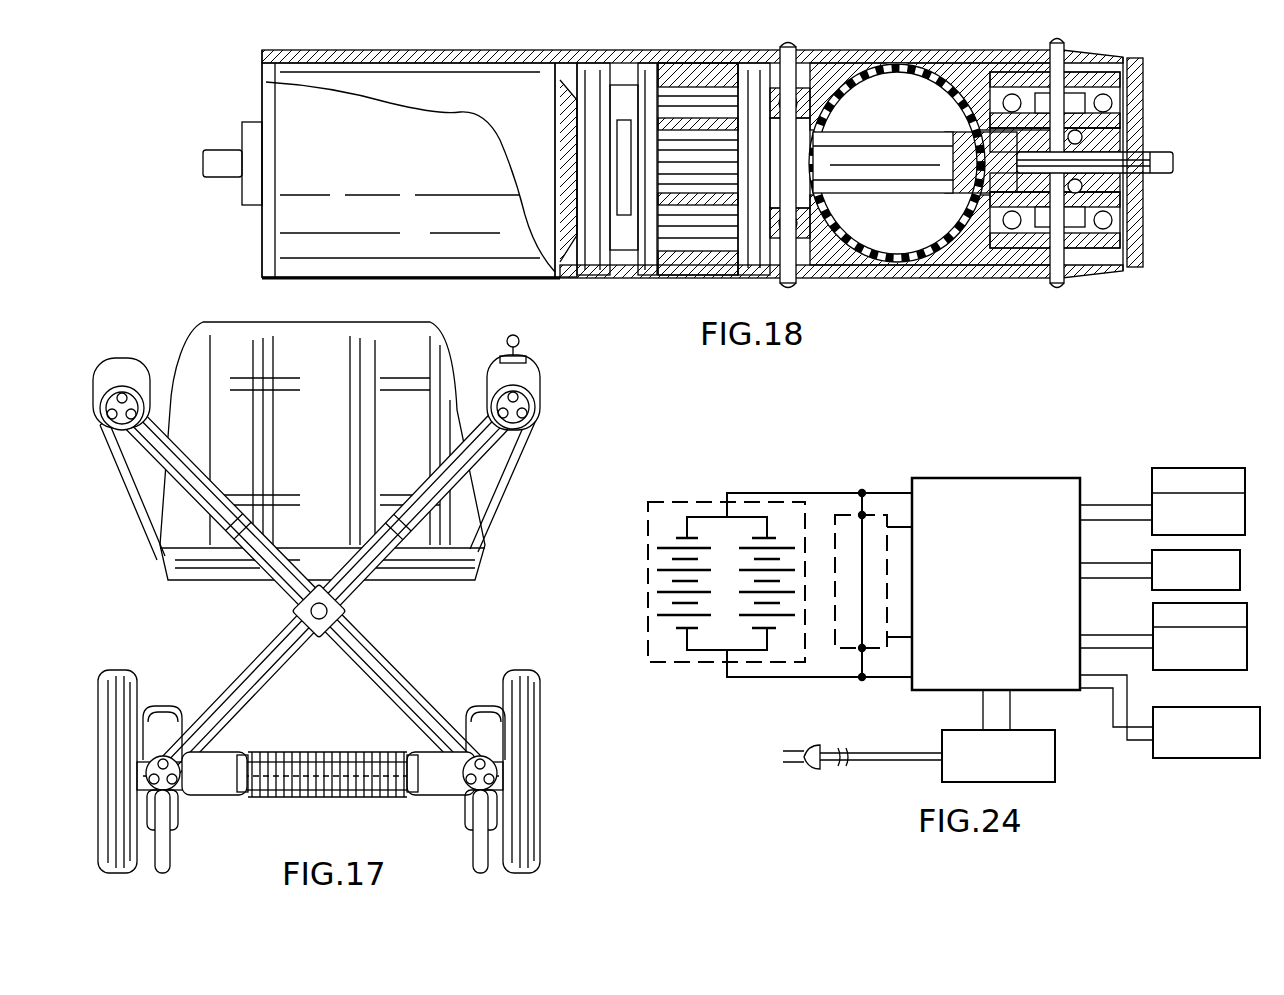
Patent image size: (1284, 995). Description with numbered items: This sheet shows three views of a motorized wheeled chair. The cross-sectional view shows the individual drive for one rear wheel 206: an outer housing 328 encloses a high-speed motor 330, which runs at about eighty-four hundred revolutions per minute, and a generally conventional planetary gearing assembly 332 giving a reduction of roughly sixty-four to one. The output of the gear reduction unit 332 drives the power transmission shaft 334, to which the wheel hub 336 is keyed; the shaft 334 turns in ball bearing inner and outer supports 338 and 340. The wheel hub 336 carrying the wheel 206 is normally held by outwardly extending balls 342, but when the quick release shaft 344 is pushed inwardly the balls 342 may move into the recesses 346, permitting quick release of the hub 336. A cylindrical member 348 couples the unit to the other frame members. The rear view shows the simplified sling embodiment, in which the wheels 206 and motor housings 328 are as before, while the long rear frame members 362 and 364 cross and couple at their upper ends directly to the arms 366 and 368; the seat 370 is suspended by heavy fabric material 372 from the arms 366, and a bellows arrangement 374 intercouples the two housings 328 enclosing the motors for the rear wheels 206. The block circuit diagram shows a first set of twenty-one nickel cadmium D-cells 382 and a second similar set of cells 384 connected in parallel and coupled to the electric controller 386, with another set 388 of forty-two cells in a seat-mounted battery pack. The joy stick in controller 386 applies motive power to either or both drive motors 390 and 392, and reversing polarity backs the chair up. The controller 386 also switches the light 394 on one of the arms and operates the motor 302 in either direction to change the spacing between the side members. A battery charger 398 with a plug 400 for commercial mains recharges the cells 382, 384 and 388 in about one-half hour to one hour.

In FIG. 17, the wheel 206 is at (137, 682).
In FIG. 24, the motor 302 is at (1192, 758).
In FIG. 18, the outer housing 328 is at (452, 62).
In FIG. 17, the outer housing 328 is at (215, 792).
In FIG. 18, the high-speed motor 330 is at (373, 167).
In FIG. 18, the planetary gearing assembly 332 is at (692, 62).
In FIG. 18, the power transmission shaft 334 is at (865, 168).
In FIG. 18, the wheel hub 336 is at (1141, 252).
In FIG. 18, the ball bearing inner support 338 is at (800, 48).
In FIG. 18, the ball bearing outer support 340 is at (1012, 82).
In FIG. 18, the balls 342 is at (1112, 122).
In FIG. 18, the quick release shaft 344 is at (1180, 162).
In FIG. 18, the recesses 346 is at (1145, 206).
In FIG. 18, the cylindrical member 348 is at (945, 68).
In FIG. 17, the rear frame member 362 is at (378, 650).
In FIG. 17, the rear frame member 364 is at (265, 650).
In FIG. 17, the arm 366 is at (135, 388).
In FIG. 17, the arm 368 is at (528, 428).
In FIG. 17, the seat 370 is at (163, 562).
In FIG. 17, the heavy fabric material 372 is at (128, 500).
In FIG. 17, the bellows arrangement 374 is at (350, 800).
In FIG. 24, the first set of nickel cadmium D-cells 382 is at (676, 536).
In FIG. 24, the second set of cells 384 is at (783, 620).
In FIG. 24, the controller 386 is at (1008, 478).
In FIG. 24, the set of nickel cadmium D-cells 388 is at (840, 650).
In FIG. 24, the drive motor 390 is at (1165, 468).
In FIG. 24, the drive motor 392 is at (1182, 670).
In FIG. 24, the light 394 is at (1158, 583).
In FIG. 24, the battery charger 398 is at (948, 738).
In FIG. 24, the plug 400 is at (820, 763).